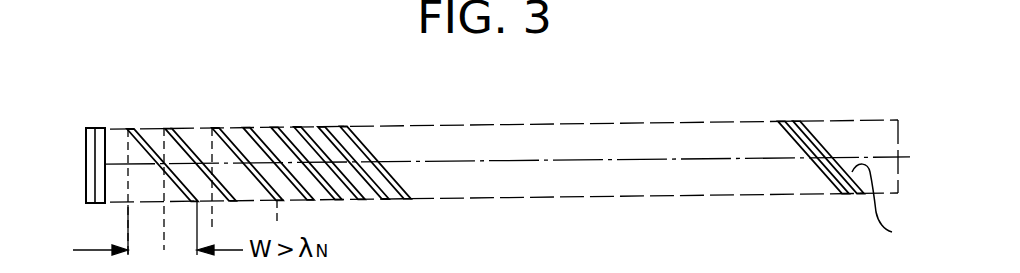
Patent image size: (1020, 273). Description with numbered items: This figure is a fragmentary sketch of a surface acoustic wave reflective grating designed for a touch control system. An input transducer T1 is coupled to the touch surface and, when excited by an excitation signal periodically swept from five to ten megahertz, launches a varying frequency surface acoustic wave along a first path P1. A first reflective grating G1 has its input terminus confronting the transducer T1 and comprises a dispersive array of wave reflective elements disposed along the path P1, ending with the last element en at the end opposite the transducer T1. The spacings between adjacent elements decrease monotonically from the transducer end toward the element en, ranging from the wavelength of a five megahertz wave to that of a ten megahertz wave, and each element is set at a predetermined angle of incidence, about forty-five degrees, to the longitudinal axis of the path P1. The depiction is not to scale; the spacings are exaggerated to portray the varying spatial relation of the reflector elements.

The input transducer T1 is at (86, 164).
The first reflective grating G1 is at (450, 197).
The first path P1 is at (521, 158).
The last reflective element en is at (885, 207).